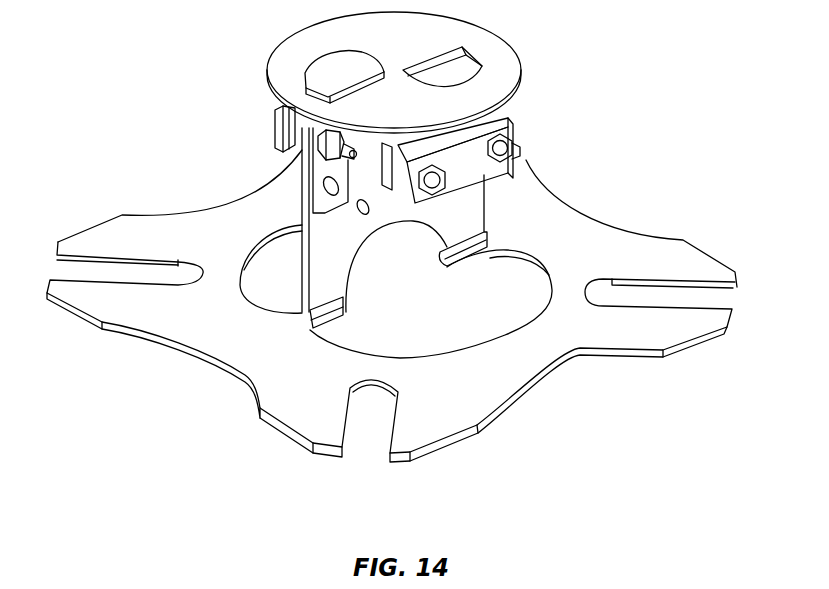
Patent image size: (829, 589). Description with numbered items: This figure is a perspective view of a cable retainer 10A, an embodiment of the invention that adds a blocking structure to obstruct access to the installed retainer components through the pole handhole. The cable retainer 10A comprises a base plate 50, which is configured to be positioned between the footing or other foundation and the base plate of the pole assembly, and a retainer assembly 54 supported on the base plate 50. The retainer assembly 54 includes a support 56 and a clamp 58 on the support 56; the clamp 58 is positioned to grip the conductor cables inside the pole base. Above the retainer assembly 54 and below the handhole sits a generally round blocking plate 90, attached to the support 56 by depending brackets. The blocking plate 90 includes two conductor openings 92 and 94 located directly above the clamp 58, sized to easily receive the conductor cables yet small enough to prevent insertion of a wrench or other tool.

The cable retainer 10A is at (614, 206).
The base plate 50 is at (580, 348).
The retainer assembly 54 is at (297, 285).
The support 56 is at (475, 200).
The clamp 58 is at (518, 156).
The blocking plate 90 is at (417, 72).
The conductor opening 92 is at (468, 55).
The conductor opening 94 is at (312, 62).